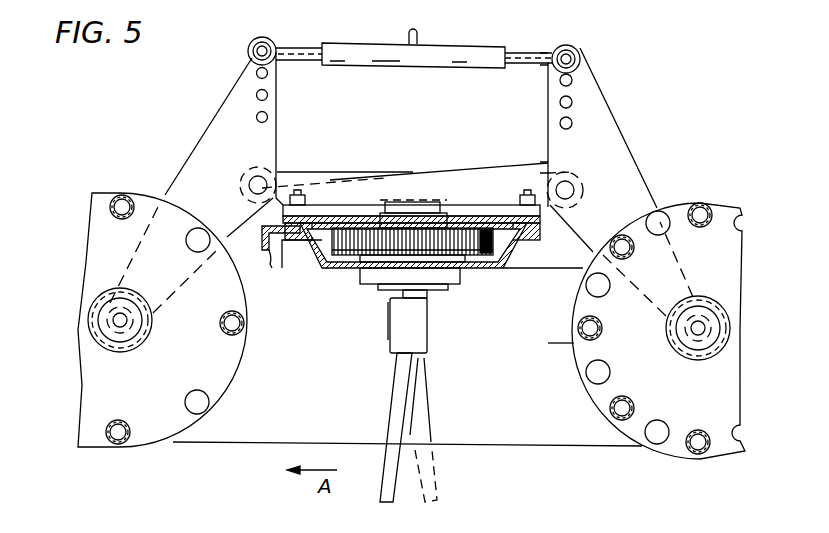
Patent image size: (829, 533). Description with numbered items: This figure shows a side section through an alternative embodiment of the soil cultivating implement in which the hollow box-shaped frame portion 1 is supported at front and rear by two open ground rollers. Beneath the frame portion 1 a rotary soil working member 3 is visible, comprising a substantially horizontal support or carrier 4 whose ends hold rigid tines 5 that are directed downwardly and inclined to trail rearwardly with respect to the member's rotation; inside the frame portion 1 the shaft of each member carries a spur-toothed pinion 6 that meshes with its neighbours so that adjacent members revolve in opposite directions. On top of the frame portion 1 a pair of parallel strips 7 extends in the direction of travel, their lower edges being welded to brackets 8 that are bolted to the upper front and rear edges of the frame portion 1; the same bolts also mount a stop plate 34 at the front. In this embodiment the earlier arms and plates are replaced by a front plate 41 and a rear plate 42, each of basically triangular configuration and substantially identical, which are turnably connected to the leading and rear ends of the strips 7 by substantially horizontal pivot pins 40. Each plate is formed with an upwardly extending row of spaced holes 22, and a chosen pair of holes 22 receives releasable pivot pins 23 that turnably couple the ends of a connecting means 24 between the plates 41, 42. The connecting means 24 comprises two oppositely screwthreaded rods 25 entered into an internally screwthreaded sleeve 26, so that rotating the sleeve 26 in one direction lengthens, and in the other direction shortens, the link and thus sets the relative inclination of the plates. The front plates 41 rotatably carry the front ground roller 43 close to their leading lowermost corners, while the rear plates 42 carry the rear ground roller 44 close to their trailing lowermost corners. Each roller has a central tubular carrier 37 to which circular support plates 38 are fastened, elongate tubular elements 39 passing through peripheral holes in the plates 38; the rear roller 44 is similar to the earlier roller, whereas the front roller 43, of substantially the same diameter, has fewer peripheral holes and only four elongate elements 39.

The hollow box-shaped frame portion 1 is at (330, 270).
The rotary soil working member 3 is at (392, 402).
The support or carrier 4 is at (425, 328).
The rigid tine 5 is at (403, 428).
The pinion 6 is at (470, 268).
The strip 7 is at (332, 176).
The bracket 8 is at (312, 213).
The hole 22 is at (268, 117).
The releasable pivot pin 23 is at (249, 52).
The connecting means 24 is at (414, 58).
The screwthreaded rod 25 is at (300, 46).
The internally screwthreaded sleeve 26 is at (363, 68).
The stop plate 34 is at (270, 254).
The central tubular carrier 37 is at (118, 353).
The circular support plate 38 is at (222, 379).
The elongate element 39 is at (124, 421).
The horizontal pivot pin 40 is at (249, 186).
The front plate 41 is at (208, 118).
The rear plate 42 is at (615, 125).
The front ground roller 43 is at (147, 185).
The rear ground roller 44 is at (717, 196).